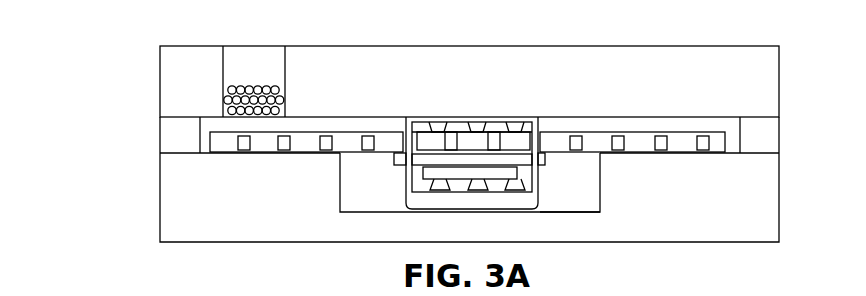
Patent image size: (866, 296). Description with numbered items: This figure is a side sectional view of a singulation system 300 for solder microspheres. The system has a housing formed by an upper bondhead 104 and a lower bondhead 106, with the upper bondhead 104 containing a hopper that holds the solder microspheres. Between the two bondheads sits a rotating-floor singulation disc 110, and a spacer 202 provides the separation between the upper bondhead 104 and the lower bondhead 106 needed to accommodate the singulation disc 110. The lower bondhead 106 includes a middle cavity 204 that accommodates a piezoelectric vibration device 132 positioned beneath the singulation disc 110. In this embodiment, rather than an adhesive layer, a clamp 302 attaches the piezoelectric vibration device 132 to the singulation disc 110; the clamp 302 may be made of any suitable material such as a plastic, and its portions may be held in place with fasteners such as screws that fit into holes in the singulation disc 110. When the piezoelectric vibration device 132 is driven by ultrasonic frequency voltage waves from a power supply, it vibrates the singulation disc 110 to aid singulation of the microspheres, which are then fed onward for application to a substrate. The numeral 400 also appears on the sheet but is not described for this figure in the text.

The upper bondhead 104 is at (765, 82).
The lower bondhead 106 is at (763, 207).
The singulation disc 110 is at (223, 143).
The spacer 202 is at (767, 137).
The piezoelectric vibration device 132 is at (404, 175).
The clamp 302 is at (527, 198).
The cavity 204 is at (582, 192).
The assembly 400 is at (797, 295).
The singulation system 300 is at (763, 32).